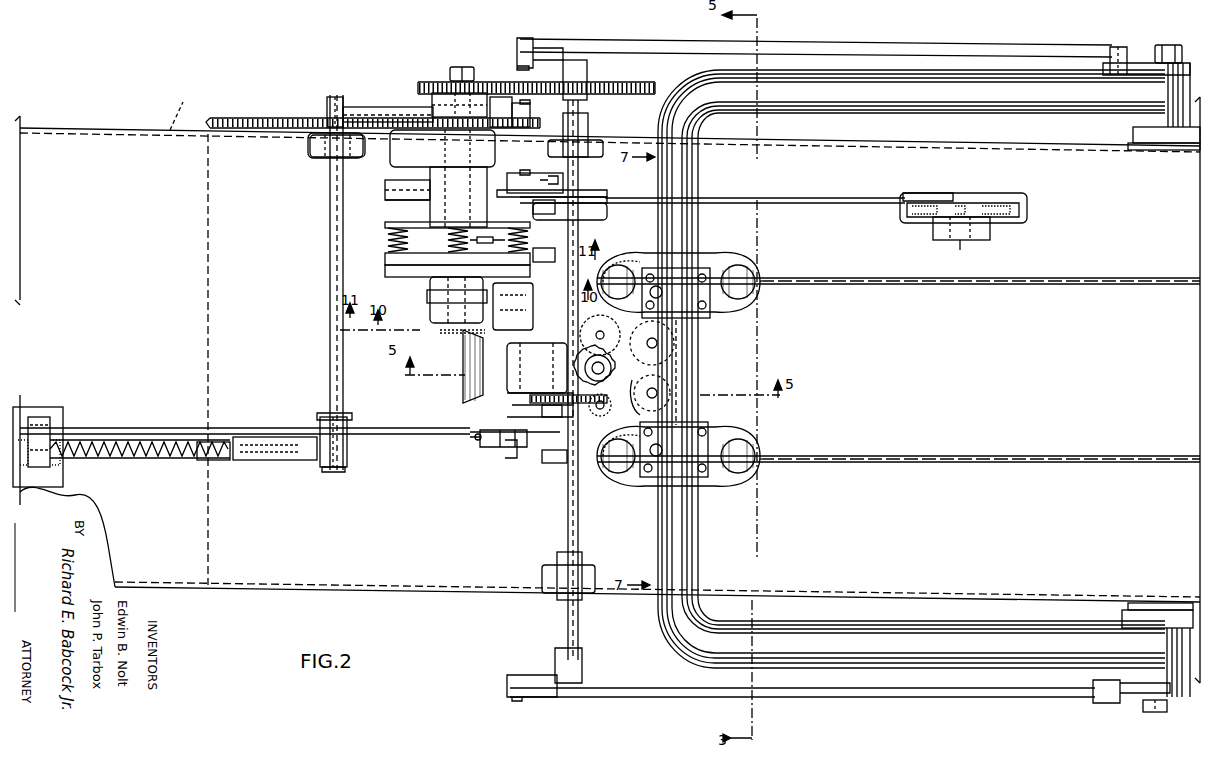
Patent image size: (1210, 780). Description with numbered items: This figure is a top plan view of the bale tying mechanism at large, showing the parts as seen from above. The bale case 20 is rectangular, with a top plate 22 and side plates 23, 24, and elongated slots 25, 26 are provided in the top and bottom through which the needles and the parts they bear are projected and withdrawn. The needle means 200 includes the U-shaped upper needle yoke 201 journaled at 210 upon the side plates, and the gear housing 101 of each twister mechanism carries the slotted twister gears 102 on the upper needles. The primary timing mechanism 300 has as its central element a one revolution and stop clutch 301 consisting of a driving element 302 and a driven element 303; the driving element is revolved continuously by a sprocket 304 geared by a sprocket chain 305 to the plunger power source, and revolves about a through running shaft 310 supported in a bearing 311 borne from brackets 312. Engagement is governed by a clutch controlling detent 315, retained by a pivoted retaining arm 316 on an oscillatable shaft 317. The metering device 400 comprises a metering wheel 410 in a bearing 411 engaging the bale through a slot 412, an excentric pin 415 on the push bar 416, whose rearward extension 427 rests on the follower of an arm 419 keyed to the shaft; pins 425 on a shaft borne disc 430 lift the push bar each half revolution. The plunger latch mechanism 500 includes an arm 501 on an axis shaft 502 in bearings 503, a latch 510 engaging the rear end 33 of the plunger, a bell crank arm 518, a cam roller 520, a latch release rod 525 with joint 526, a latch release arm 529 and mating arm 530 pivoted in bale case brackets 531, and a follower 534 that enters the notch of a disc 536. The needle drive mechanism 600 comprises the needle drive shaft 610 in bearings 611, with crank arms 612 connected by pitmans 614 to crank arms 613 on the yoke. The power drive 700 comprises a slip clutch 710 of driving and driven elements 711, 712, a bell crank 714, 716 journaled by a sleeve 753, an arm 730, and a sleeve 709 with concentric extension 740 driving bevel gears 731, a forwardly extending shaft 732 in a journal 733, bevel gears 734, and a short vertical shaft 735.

The bale case 20 is at (115, 129).
The top plate 22 is at (142, 300).
The side plate 23 is at (242, 590).
The side plate 24 is at (181, 106).
The elongated slot 25 is at (982, 465).
The elongated slot 26 is at (1042, 278).
The rear end of the plunger 33 is at (208, 545).
The gear housing 101 is at (735, 298).
The slotted twister gear 102 is at (755, 258).
The needle means 200 is at (735, 248).
The upper needle yoke 201 is at (890, 118).
The yoke journal 210 is at (1166, 44).
The primary timing mechanism 300 is at (442, 49).
The one revolution and stop clutch 301 is at (385, 145).
The driving element 302 is at (440, 165).
The driven element 303 is at (420, 100).
The sprocket 304 is at (402, 110).
The sprocket chain 305 is at (269, 120).
The through running shaft 310 is at (385, 192).
The bearing 311 is at (430, 214).
The bracket 312 is at (395, 200).
The clutch controlling detent 315 is at (477, 73).
The pivoted retaining arm 316 is at (489, 116).
The oscillatable shaft 317 is at (519, 110).
The metering device 400 is at (844, 227).
The metering wheel 410 is at (970, 210).
The bearing 411 is at (962, 242).
The slot 412 is at (1028, 207).
The excentric pin 415 is at (955, 193).
The push bar 416 is at (807, 199).
The arm 419 is at (535, 175).
The pin 425 is at (550, 192).
The rearward extension 427 is at (605, 197).
The shaft borne disc 430 is at (606, 211).
The plunger latch mechanism 500 is at (340, 49).
The arm 501 is at (352, 100).
The axis shaft 502 is at (330, 203).
The bearing 503 is at (318, 152).
The latch 510 is at (140, 440).
The bell crank arm 518 is at (290, 437).
The cam roller 520 is at (252, 440).
The latch release rod 525 is at (89, 427).
The joint 526 is at (39, 415).
The latch release arm 529 is at (512, 455).
The mating arm 530 is at (530, 416).
The bale case bracket 531 is at (536, 465).
The follower 534 is at (550, 418).
The disc 536 is at (598, 413).
The needle drive mechanism 600 is at (580, 11).
The needle drive shaft 610 is at (578, 64).
The bearing 611 is at (584, 133).
The crank arm 612 is at (563, 62).
The crank arm 613 is at (1124, 48).
The pitman 614 is at (870, 46).
The power drive 700 is at (394, 297).
The sleeve 709 is at (429, 298).
The slip clutch 710 is at (458, 240).
The driving element 711 is at (386, 252).
The driven element 712 is at (385, 269).
The bell crank 714 is at (532, 218).
The bell crank 716 is at (531, 258).
The arm 730 is at (532, 300).
The bevel gears 731 is at (465, 378).
The forwardly extending shaft 732 is at (507, 404).
The journal 733 is at (537, 368).
The bevel gears 734 is at (600, 325).
The short vertical shaft 735 is at (590, 355).
The concentric extension 740 is at (430, 323).
The sleeve 753 is at (528, 238).